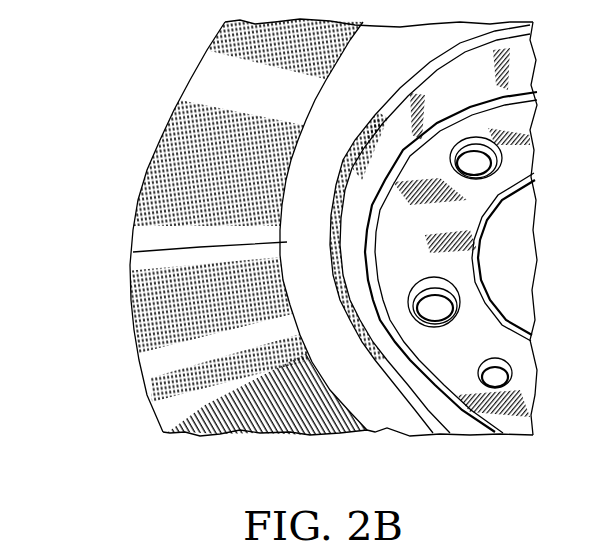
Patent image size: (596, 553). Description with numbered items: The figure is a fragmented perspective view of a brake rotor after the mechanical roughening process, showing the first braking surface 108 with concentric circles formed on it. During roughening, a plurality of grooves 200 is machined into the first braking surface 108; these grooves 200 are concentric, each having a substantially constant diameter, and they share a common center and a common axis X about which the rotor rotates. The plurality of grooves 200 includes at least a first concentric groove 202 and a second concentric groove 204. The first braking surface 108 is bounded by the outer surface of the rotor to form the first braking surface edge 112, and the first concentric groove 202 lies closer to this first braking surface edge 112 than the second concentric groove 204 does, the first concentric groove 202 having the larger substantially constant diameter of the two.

The first braking surface edge 112 is at (150, 400).
The first concentric groove 202 is at (163, 432).
The second concentric groove 204 is at (207, 437).
The grooves 200 is at (287, 433).
The first braking surface 108 is at (379, 432).
The common axis X is at (535, 260).